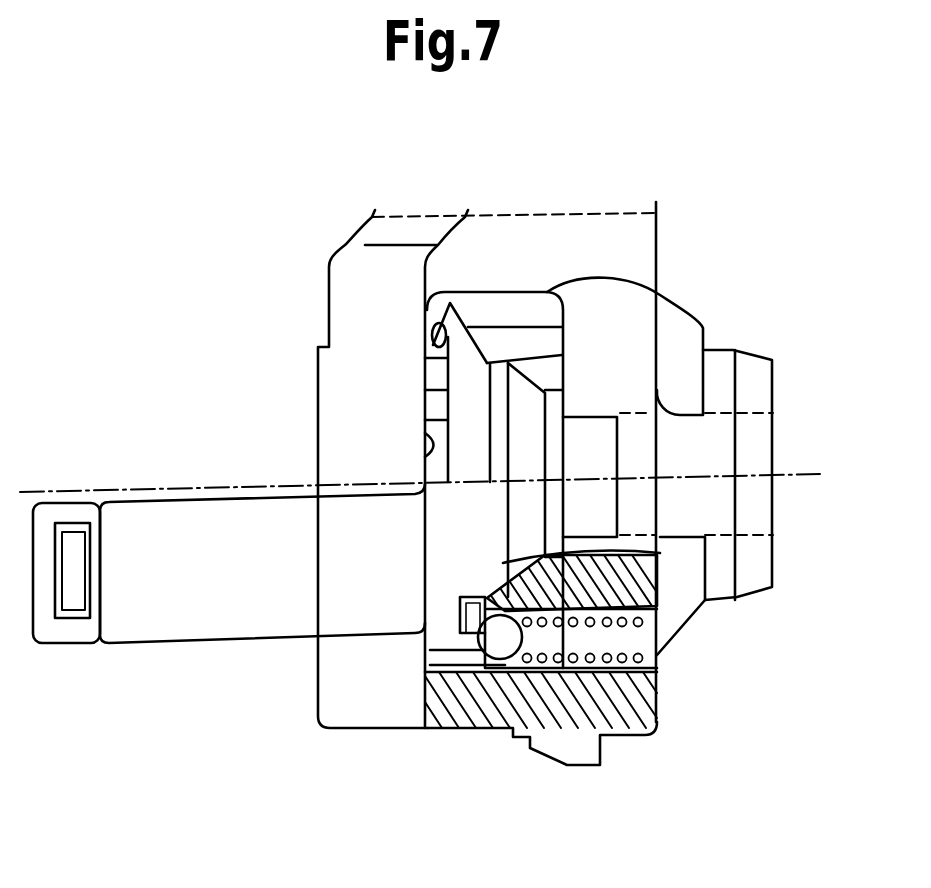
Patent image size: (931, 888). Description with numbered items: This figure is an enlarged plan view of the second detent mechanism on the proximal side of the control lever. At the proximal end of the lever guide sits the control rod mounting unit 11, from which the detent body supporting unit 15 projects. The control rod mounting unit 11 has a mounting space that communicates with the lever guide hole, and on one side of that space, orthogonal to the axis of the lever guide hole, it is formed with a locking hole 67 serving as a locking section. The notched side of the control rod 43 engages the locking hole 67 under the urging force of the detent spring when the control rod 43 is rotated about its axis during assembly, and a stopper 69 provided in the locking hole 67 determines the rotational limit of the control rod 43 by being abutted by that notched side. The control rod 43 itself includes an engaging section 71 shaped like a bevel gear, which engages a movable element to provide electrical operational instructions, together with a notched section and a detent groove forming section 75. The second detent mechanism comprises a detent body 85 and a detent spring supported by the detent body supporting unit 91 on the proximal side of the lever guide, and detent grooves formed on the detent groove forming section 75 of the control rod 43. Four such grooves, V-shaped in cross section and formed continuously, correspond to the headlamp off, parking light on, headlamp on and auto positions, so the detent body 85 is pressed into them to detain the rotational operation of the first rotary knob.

The control rod mounting unit 11 is at (477, 292).
The detent body supporting unit 15 is at (163, 515).
The control rod 43 is at (470, 372).
The locking hole 67 is at (425, 435).
The stopper 69 is at (563, 345).
The engaging section 71 is at (433, 330).
The detent groove forming section 75 is at (462, 616).
The detent body 85 is at (500, 648).
The detent body supporting unit 91 is at (660, 553).